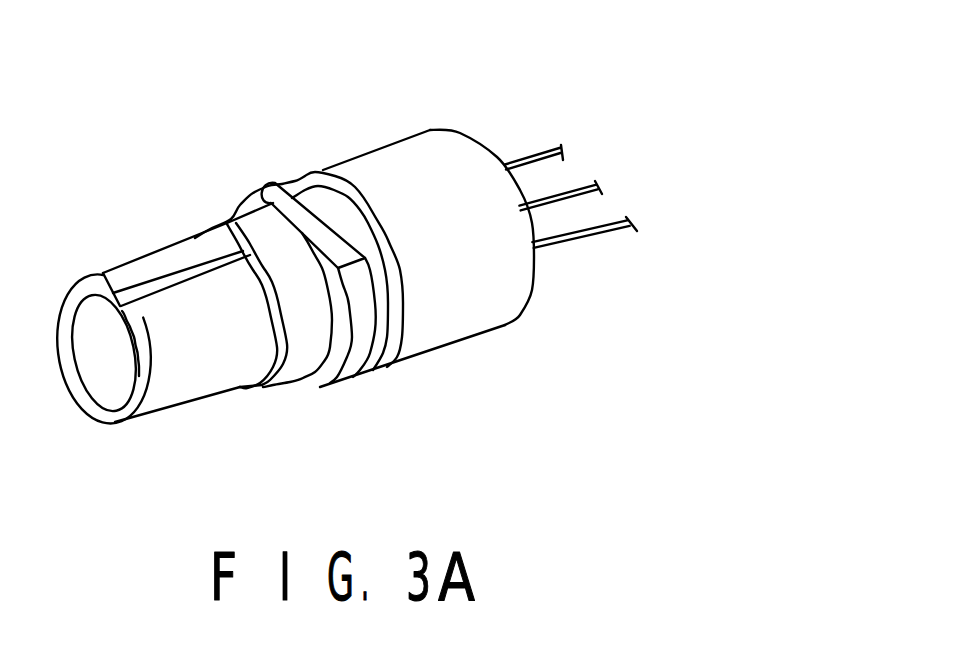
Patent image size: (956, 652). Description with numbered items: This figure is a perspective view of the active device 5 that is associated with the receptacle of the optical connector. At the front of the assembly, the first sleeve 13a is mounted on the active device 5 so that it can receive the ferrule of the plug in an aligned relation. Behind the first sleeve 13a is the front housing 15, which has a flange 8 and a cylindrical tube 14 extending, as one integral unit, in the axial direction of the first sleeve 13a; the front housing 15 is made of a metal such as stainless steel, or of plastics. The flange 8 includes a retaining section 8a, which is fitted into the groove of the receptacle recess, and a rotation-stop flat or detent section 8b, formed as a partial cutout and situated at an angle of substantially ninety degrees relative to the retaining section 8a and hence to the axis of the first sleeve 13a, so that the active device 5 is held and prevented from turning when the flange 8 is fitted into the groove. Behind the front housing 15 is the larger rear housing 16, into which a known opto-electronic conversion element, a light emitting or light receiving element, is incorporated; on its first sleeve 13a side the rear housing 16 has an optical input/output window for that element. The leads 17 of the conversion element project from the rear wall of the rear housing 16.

The active device 5 is at (351, 128).
The flange 8 is at (352, 281).
The retaining section 8a is at (350, 380).
The rotation-stop flat section 8b is at (273, 200).
The first sleeve 13a is at (165, 390).
The cylindrical tube 14 is at (297, 353).
The front housing 15 is at (225, 201).
The rear housing 16 is at (515, 280).
The leads 17 is at (600, 225).